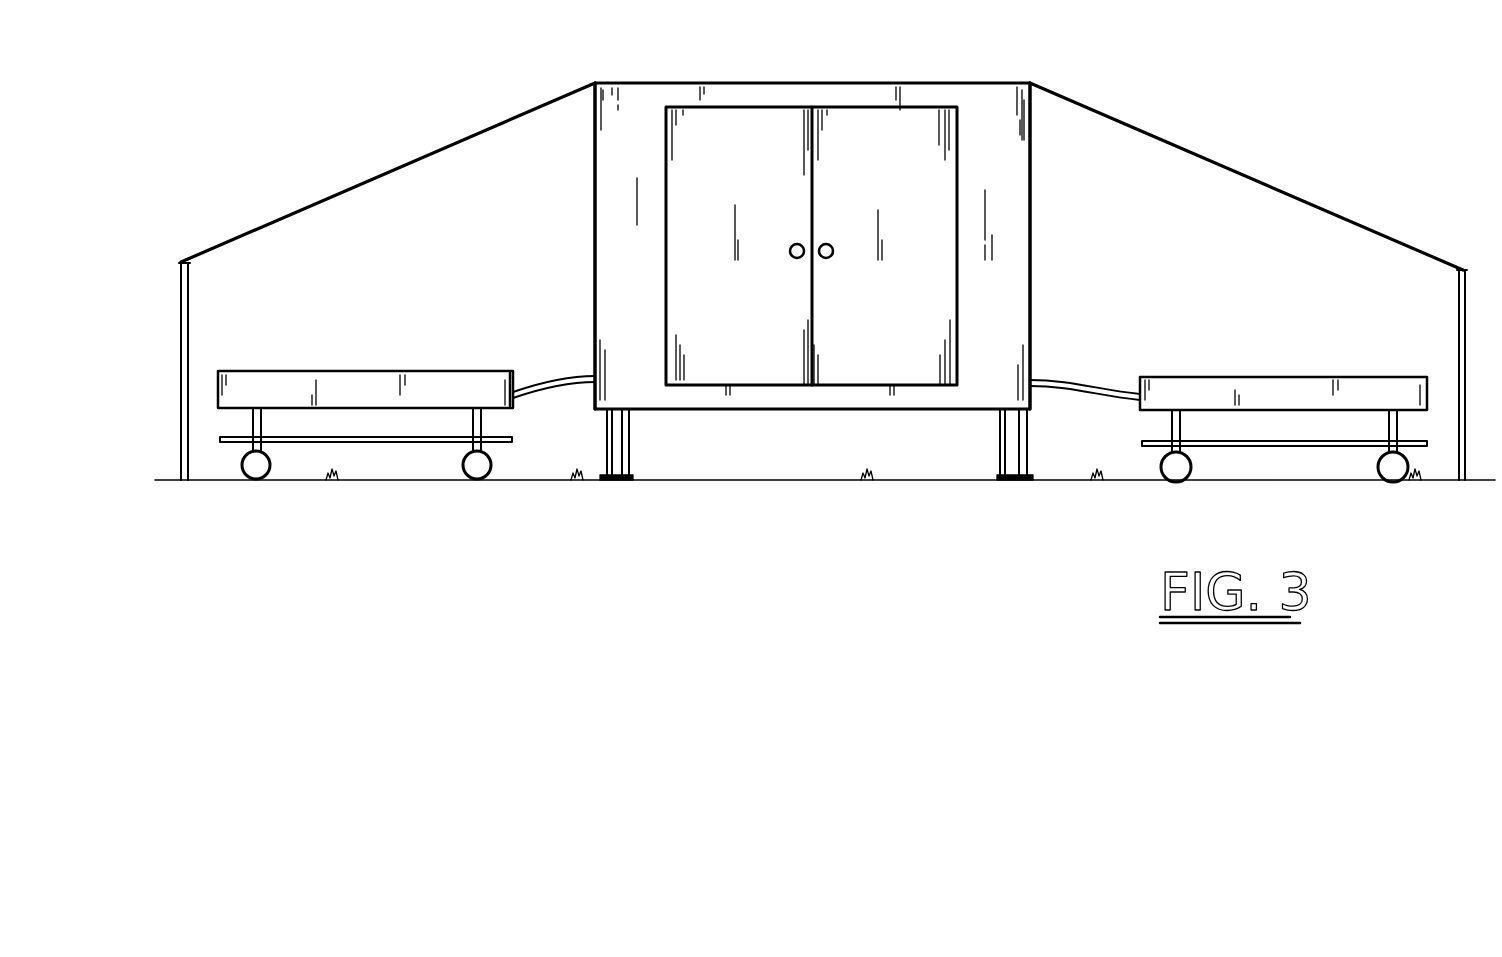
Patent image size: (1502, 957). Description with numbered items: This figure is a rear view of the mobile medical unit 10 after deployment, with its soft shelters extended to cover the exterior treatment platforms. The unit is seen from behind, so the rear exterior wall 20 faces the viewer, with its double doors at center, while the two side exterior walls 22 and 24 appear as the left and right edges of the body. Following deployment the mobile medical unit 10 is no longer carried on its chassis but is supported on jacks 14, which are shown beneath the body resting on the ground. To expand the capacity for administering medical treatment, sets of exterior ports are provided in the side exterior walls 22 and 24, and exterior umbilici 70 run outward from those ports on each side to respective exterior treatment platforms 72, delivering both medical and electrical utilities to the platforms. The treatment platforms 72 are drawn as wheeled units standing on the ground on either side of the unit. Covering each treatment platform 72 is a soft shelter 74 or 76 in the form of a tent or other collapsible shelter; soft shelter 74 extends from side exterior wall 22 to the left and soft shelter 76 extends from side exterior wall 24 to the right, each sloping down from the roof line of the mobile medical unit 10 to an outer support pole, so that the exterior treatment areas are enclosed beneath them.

The mobile medical unit 10 is at (677, 83).
The jacks 14 is at (632, 437).
The rear exterior wall 20 is at (1003, 174).
The side exterior wall 22 is at (595, 148).
The side exterior wall 24 is at (1033, 209).
The exterior umbilici 70 is at (565, 376).
The exterior treatment platforms 72 is at (395, 370).
The soft shelter 74 is at (393, 172).
The soft shelter 76 is at (1167, 145).